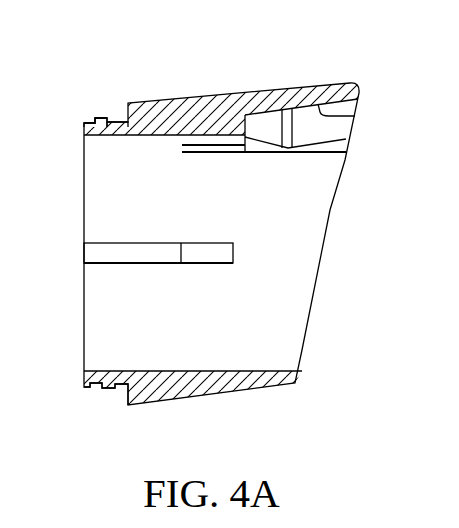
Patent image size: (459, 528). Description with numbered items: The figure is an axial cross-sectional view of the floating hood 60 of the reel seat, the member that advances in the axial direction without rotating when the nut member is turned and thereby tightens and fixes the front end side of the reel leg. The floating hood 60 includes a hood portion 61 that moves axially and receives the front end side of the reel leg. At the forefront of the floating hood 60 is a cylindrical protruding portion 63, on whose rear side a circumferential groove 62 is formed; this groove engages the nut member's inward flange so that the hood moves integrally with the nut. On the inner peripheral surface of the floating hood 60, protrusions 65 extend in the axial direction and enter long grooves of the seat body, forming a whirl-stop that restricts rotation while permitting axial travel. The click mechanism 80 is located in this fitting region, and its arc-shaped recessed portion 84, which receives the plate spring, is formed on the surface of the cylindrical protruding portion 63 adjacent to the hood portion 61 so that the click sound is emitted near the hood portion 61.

The floating hood 60 is at (265, 78).
The hood portion 61 is at (356, 115).
The circumferential groove 62 is at (121, 121).
The cylindrical protruding portion 63 is at (106, 388).
The protrusions 65 is at (220, 253).
The click mechanism 80 is at (103, 116).
The recessed portion 84 is at (96, 118).